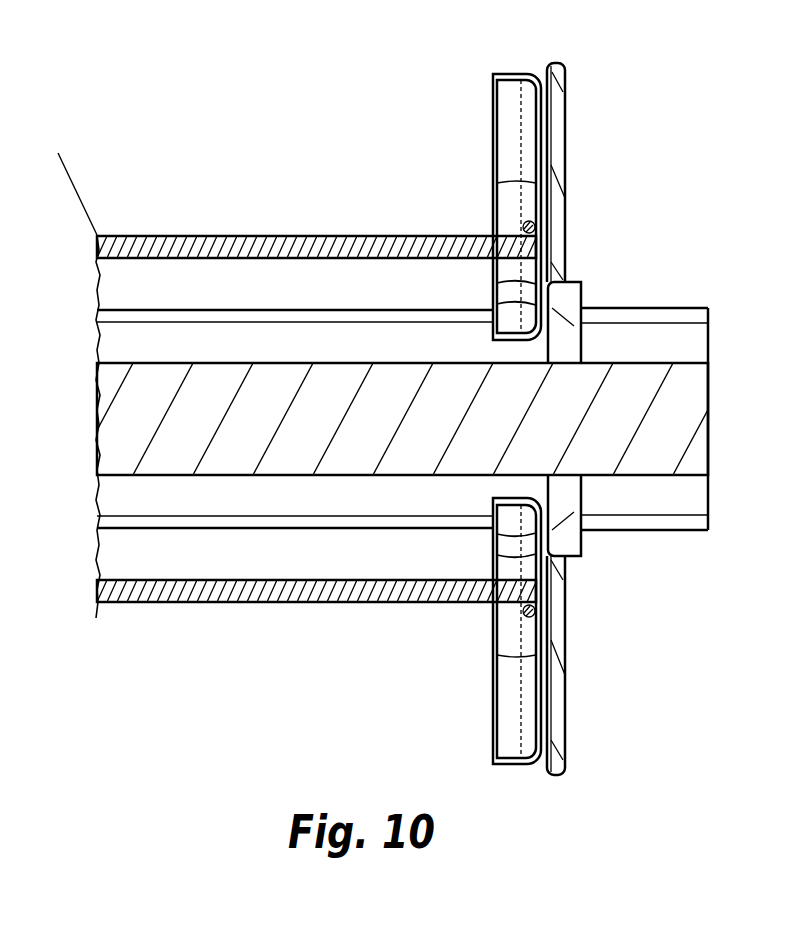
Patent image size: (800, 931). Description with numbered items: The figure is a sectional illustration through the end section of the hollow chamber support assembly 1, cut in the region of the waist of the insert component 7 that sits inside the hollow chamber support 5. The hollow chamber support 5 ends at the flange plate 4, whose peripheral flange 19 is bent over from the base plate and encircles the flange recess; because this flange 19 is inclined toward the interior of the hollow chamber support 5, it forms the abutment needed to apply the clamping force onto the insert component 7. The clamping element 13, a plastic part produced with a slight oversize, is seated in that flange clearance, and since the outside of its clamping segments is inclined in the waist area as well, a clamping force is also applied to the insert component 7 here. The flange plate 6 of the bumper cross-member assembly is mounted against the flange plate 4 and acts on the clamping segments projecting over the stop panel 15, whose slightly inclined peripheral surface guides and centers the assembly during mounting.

The shaft assembly 1 is at (118, 137).
The flange plate 4 is at (569, 131).
The hollow chamber support 5 is at (295, 233).
The flange plate 6 is at (490, 153).
The insert component 7 is at (200, 306).
The clamping element 13 is at (593, 300).
The stop panel 15 is at (579, 282).
The flange 19 is at (513, 330).